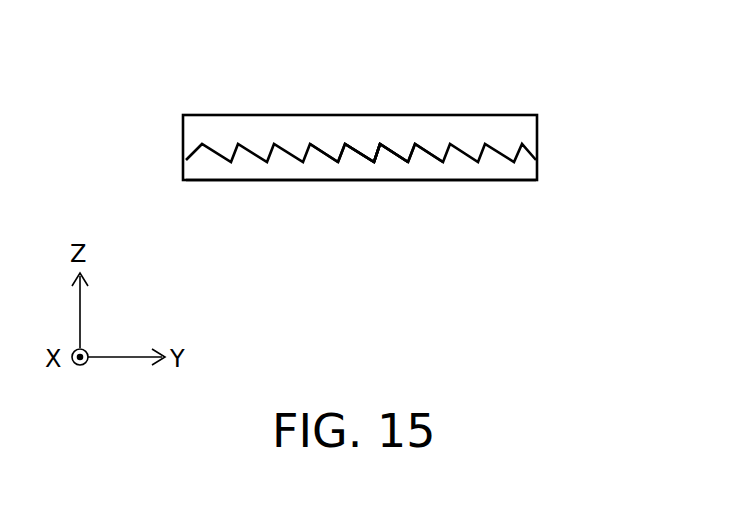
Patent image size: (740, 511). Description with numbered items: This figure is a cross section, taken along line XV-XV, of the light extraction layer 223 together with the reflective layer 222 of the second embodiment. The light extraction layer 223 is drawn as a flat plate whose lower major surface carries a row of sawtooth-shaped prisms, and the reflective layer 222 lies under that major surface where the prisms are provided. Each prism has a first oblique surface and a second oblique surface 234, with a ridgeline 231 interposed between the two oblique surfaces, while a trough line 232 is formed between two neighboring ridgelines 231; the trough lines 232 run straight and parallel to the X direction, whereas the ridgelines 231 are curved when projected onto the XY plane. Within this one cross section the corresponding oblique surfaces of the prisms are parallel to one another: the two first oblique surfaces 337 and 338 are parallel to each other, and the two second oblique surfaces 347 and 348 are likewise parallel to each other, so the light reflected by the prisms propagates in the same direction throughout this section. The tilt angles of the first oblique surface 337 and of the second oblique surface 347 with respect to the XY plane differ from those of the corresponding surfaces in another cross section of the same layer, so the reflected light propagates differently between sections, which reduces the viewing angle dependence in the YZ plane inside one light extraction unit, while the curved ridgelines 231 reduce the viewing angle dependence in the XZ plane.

The reflective layer 222 is at (520, 172).
The light extraction layer 223 is at (518, 130).
The ridgeline 231 is at (377, 154).
The trough line 232 is at (385, 146).
The second oblique surface 234 is at (362, 266).
The first oblique surface 337 is at (322, 158).
The first oblique surface 338 is at (357, 157).
The second oblique surface 347 is at (415, 152).
The second oblique surface 348 is at (375, 158).